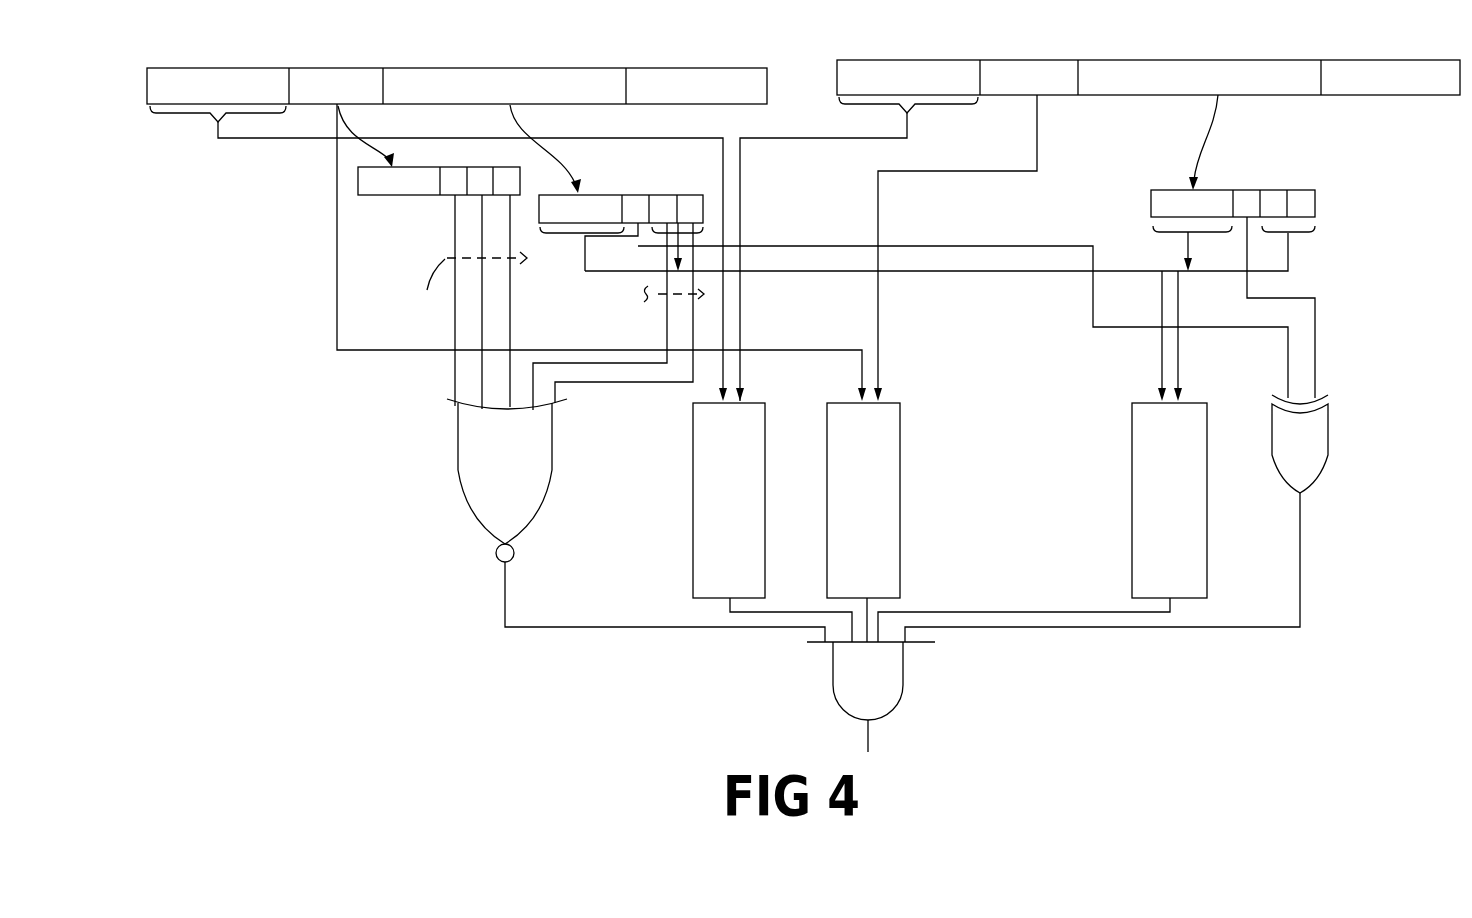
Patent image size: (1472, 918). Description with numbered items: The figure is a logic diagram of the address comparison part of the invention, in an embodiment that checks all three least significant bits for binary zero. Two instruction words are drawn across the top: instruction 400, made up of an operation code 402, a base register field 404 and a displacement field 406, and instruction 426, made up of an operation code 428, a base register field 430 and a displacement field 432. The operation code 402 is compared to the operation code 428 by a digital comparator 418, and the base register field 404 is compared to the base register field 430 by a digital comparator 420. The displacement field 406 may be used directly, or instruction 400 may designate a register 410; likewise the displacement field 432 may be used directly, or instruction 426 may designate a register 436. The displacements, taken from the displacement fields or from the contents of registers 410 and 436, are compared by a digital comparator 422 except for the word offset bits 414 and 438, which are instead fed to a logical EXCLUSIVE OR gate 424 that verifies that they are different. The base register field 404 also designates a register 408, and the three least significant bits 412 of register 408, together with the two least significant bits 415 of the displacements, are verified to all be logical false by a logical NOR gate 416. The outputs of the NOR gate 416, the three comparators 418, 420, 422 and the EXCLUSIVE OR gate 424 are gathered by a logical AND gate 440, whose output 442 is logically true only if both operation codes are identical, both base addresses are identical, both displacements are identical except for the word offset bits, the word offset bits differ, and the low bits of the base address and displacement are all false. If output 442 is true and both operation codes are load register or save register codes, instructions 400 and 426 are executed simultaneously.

The instruction 400 is at (162, 53).
The operation code 402 is at (228, 68).
The base register field 404 is at (340, 68).
The displacement field 406 is at (578, 68).
The register 408 is at (360, 170).
The register 410 is at (539, 200).
The three least significant bits 412 is at (457, 293).
The word offset bits 414 is at (644, 250).
The two least significant bits 415 is at (644, 312).
The logical NOR gate 416 is at (532, 470).
The digital comparator 418 is at (693, 420).
The digital comparator 420 is at (900, 415).
The digital comparator 422 is at (1132, 420).
The logical EXCLUSIVE OR gate 424 is at (1324, 456).
The instruction 426 is at (836, 62).
The operation code 428 is at (917, 60).
The base register field 430 is at (1031, 60).
The displacement field 432 is at (1275, 60).
The register 436 is at (1151, 190).
The word offset bits 438 is at (1234, 252).
The logical AND gate 440 is at (890, 680).
The output 442 is at (868, 735).